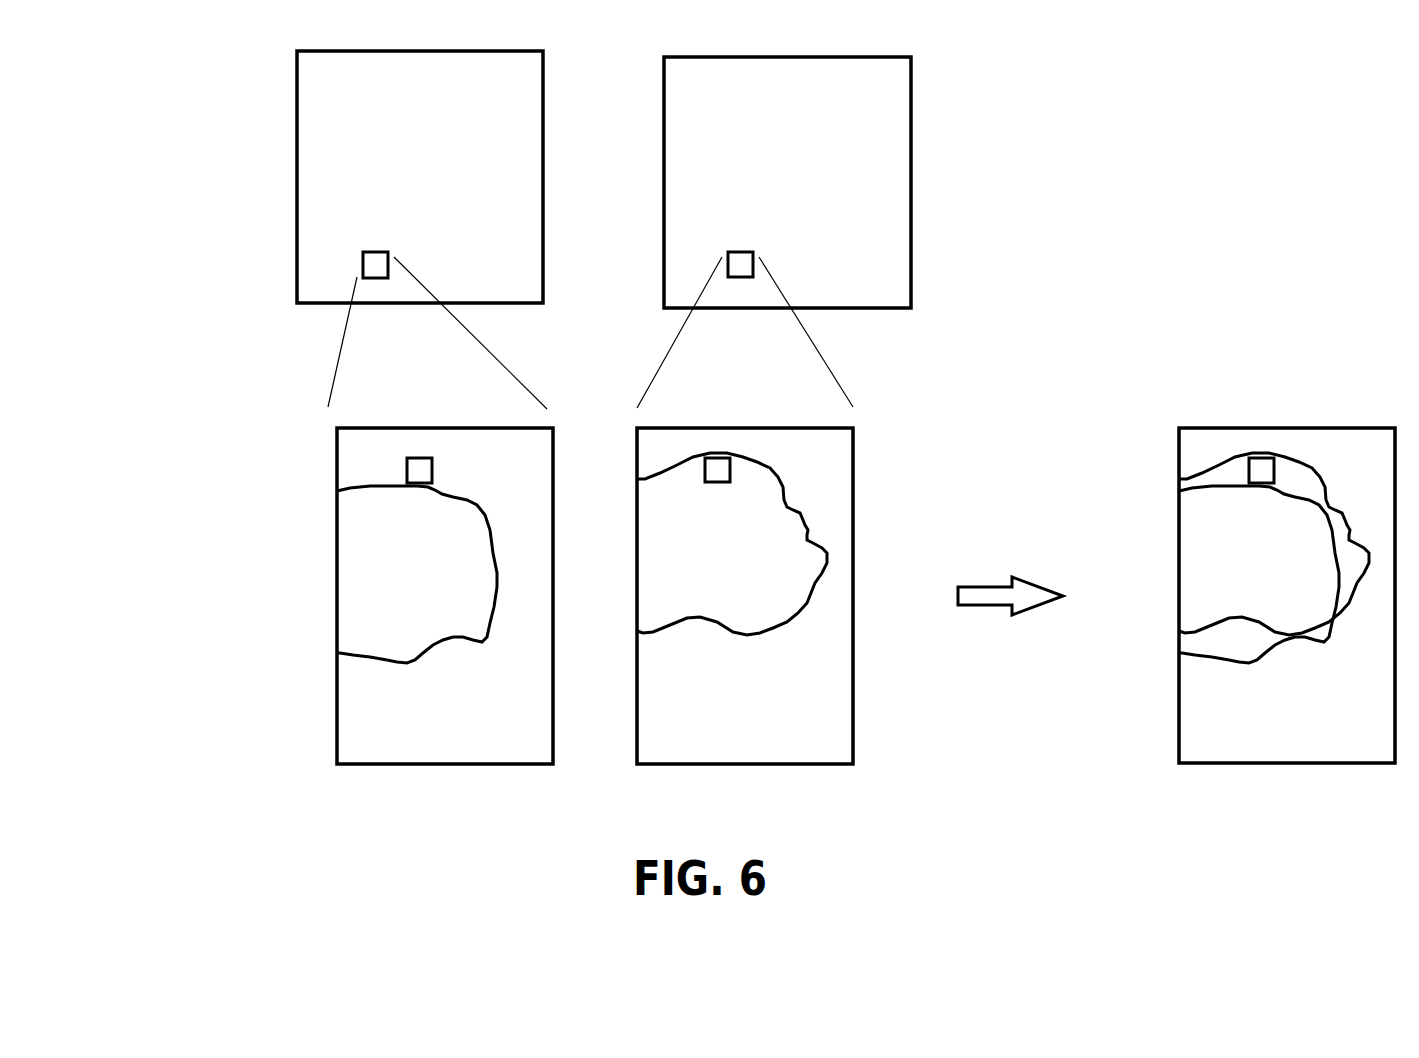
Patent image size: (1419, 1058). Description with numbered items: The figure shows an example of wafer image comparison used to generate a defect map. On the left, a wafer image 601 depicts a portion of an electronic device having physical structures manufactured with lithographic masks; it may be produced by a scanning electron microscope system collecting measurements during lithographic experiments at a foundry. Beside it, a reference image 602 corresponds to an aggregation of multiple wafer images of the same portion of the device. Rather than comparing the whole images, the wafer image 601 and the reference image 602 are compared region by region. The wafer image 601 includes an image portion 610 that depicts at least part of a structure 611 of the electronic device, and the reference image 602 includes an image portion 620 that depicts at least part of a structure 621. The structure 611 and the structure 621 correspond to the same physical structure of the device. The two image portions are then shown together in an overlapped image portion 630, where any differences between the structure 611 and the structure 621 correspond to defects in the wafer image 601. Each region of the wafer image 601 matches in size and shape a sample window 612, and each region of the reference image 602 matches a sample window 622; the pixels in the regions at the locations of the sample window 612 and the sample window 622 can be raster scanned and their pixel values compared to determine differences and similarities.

The wafer image 601 is at (420, 177).
The reference image 602 is at (787, 182).
The image portion 610 is at (330, 596).
The structure 611 is at (370, 488).
The sample window 612 is at (407, 462).
The image portion 620 is at (862, 557).
The structure 621 is at (802, 513).
The sample window 622 is at (732, 463).
The overlapped image portion 630 is at (1287, 595).